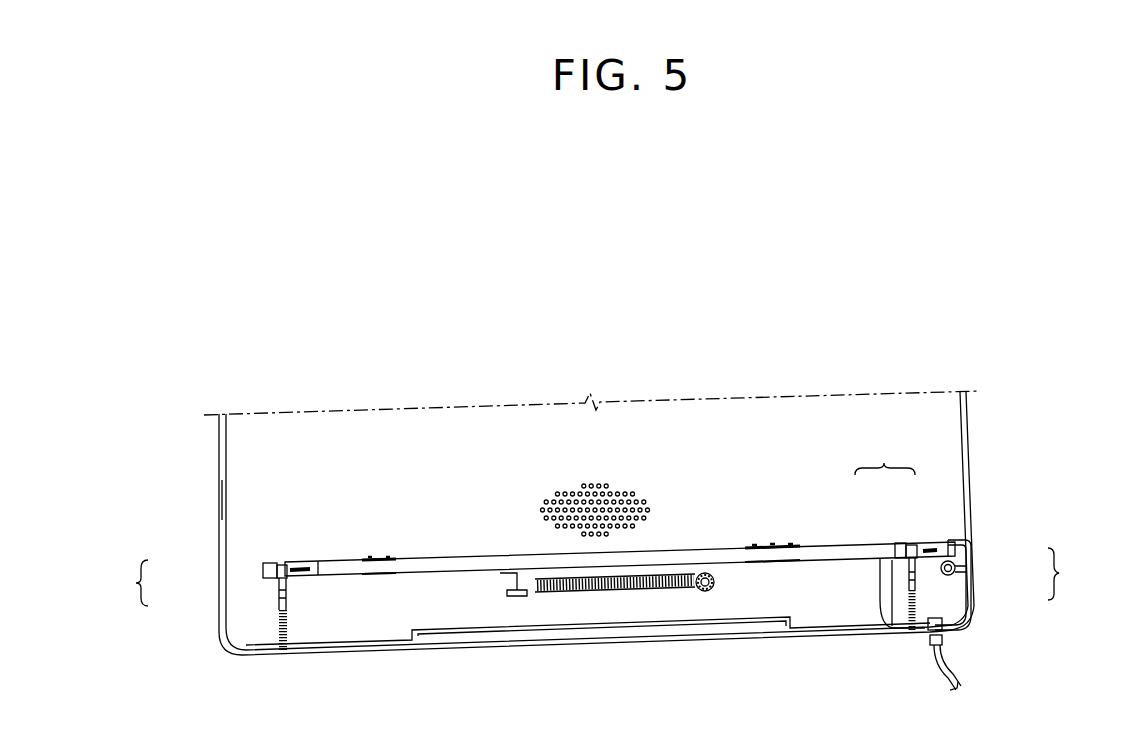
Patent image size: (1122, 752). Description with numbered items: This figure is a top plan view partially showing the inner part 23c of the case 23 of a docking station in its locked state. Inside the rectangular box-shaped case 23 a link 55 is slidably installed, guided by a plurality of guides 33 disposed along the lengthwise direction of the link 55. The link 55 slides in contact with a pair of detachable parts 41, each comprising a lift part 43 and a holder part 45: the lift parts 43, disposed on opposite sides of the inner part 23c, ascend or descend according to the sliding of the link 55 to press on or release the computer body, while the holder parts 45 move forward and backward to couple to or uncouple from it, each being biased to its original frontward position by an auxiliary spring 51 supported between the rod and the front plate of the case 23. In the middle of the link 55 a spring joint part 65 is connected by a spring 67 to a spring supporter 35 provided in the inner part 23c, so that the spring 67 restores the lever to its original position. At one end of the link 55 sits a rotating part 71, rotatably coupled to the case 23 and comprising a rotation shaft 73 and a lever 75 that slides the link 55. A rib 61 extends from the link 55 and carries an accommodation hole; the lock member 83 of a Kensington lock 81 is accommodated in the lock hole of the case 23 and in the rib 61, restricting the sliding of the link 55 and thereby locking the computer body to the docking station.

The case 23 is at (212, 440).
The inner part of the case 23c is at (248, 500).
The guide 33 is at (376, 555).
The spring supporter 35 is at (707, 594).
The detachable part 41 is at (113, 594).
The lift part 43 is at (263, 570).
The holder part 45 is at (279, 604).
The auxiliary spring 51 is at (287, 625).
The link 55 is at (460, 557).
The rib 61 is at (889, 600).
The spring joint part 65 is at (518, 598).
The spring 67 is at (622, 594).
The rotating part 71 is at (1011, 585).
The rotation shaft 73 is at (955, 568).
The lever 75 is at (973, 596).
The Kensington lock 81 is at (952, 656).
The lock member 83 is at (958, 624).